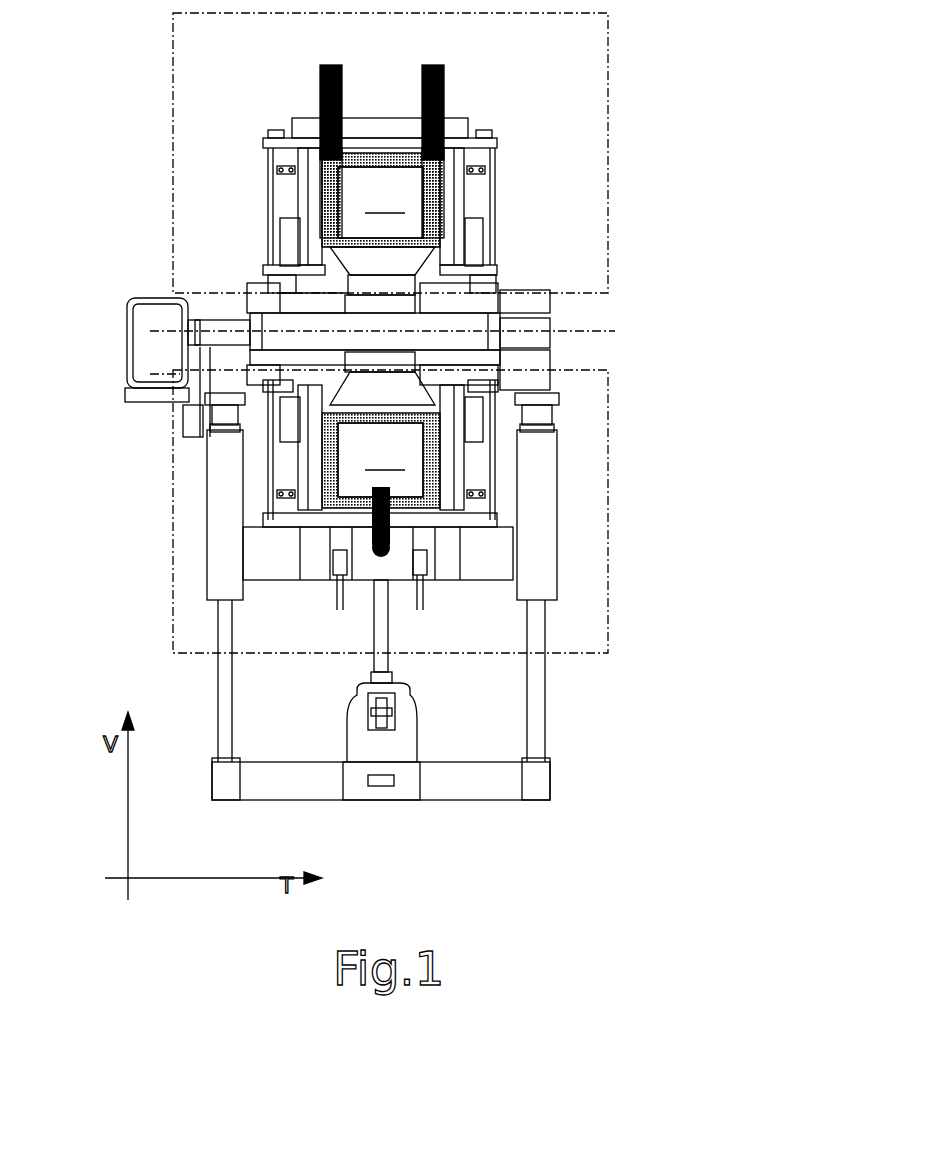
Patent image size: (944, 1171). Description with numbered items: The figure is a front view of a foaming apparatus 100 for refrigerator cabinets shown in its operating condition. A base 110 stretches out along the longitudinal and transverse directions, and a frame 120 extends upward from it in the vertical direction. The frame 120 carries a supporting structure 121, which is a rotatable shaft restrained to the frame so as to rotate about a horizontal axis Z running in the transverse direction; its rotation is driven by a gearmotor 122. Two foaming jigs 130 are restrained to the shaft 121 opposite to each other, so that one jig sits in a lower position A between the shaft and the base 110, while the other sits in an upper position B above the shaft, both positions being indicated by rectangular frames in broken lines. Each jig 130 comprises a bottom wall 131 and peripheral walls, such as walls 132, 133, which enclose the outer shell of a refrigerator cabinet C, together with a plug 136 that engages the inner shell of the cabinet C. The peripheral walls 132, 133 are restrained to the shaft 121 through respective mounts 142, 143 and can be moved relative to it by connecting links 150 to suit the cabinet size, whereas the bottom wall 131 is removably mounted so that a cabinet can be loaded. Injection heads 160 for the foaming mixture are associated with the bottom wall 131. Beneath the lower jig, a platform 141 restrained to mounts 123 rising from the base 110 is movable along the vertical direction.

The foaming apparatus 100 is at (118, 128).
The base 110 is at (483, 790).
The frame 120 is at (552, 362).
The supporting structure 121 is at (530, 300).
The gearmotor 122 is at (140, 362).
The mounts 123 is at (225, 700).
The foaming jig 130 is at (520, 162).
The bottom wall 131 is at (355, 128).
The peripheral wall 132 is at (310, 196).
The peripheral wall 133 is at (450, 196).
The plug 136 is at (380, 332).
The platform 141 is at (460, 560).
The mount 142 is at (280, 230).
The mount 143 is at (484, 218).
The connecting links 150 is at (285, 164).
The injection heads 160 is at (322, 75).
The lower position A is at (606, 532).
The upper position B is at (606, 172).
The refrigerator cabinet C is at (385, 158).
The horizontal axis Z is at (608, 300).